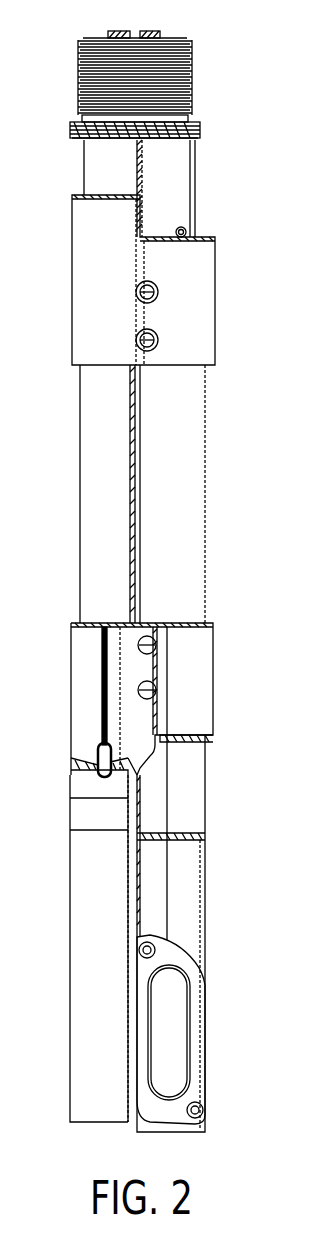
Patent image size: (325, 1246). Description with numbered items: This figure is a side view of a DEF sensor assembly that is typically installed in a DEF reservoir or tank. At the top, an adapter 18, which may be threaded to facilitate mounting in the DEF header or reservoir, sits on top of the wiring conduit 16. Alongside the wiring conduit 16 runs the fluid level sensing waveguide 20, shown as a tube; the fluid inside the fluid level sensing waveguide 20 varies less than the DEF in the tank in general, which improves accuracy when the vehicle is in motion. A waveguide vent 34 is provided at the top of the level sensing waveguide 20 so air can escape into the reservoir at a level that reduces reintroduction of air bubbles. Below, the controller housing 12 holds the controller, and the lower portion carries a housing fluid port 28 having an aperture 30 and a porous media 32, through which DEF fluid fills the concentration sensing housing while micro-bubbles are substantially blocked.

The controller housing 12 is at (86, 965).
The wiring conduit 16 is at (93, 520).
The adapter 18 is at (93, 42).
The fluid level sensing waveguide 20 is at (190, 500).
The housing fluid port 28 is at (200, 980).
The aperture 30 is at (185, 1085).
The porous media 32 is at (172, 1030).
The waveguide vent 34 is at (180, 226).